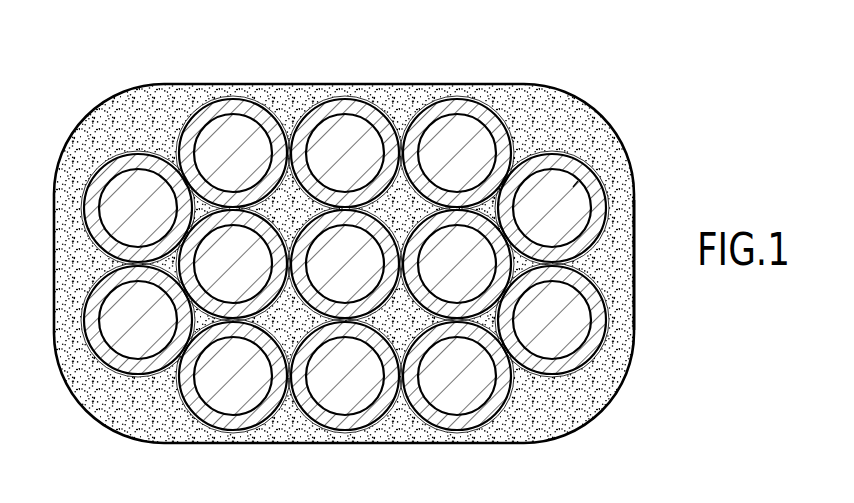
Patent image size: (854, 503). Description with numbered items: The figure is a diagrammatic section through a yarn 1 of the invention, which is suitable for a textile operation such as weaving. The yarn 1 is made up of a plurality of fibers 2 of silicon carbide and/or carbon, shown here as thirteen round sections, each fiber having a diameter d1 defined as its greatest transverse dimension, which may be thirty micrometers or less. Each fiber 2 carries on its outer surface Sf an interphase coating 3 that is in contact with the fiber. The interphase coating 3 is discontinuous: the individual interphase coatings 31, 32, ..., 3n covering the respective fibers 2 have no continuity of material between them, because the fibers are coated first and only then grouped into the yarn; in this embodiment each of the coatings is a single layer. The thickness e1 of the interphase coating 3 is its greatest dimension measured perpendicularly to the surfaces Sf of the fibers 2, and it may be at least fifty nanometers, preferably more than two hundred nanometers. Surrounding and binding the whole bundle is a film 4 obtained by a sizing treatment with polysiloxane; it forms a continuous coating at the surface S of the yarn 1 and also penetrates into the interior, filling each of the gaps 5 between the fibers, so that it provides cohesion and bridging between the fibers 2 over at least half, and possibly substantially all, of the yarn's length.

The yarn 1 is at (355, 241).
The fibers 2 is at (306, 262).
The interphase coating 3 is at (353, 269).
The interphase coating 31 is at (491, 95).
The interphase coating 32 is at (585, 156).
The interphase coating 3n is at (462, 434).
The film 4 is at (108, 100).
The gaps 5 is at (338, 380).
The surface of the yarn S is at (214, 84).
The outer surfaces of the fibers Sf is at (628, 192).
The thickness of the interphase coating e1 is at (573, 187).
The diameter of the fibers d1 is at (583, 281).